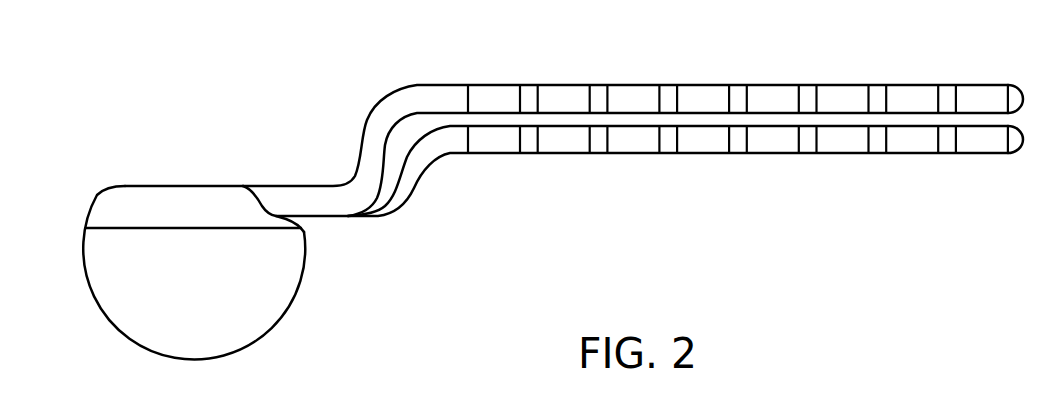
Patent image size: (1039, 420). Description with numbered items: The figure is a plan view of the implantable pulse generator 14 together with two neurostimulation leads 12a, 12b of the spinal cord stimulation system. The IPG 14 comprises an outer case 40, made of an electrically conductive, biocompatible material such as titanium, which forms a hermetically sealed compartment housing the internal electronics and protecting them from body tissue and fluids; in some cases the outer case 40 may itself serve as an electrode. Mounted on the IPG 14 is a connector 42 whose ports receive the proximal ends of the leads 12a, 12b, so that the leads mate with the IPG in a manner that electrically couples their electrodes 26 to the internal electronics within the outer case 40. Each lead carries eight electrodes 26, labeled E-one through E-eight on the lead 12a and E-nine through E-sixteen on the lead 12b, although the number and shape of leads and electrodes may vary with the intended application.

The implantable pulse generator 14 is at (124, 143).
The outer case 40 is at (302, 283).
The connector 42 is at (200, 190).
The neurostimulation lead 12a is at (405, 100).
The neurostimulation lead 12b is at (423, 180).
The electrodes 26 is at (634, 85).